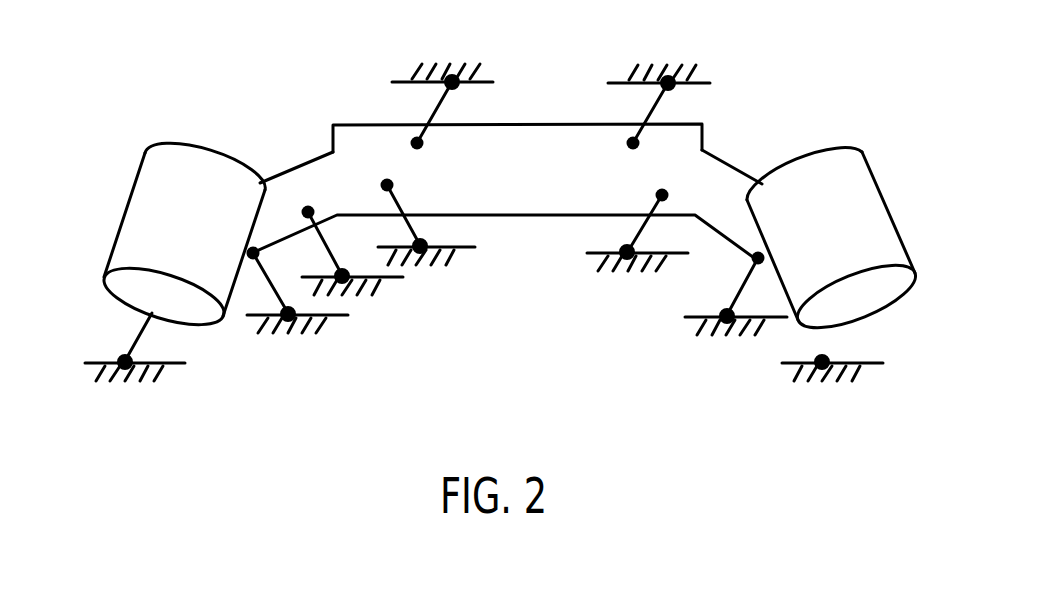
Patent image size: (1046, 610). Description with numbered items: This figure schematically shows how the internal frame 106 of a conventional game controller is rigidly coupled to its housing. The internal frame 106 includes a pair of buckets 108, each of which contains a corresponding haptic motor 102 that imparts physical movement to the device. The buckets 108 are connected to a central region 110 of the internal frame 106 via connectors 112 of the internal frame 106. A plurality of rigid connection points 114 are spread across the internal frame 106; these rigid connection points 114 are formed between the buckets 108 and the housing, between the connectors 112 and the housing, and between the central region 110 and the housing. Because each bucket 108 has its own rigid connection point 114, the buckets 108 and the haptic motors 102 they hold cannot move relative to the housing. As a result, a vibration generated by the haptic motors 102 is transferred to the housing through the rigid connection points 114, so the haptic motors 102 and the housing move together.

The haptic motor 102 is at (115, 295).
The internal frame 106 is at (546, 203).
The bucket 108 is at (145, 203).
The central region 110 is at (565, 140).
The connector 112 is at (307, 172).
The rigid connection point 114 is at (645, 95).